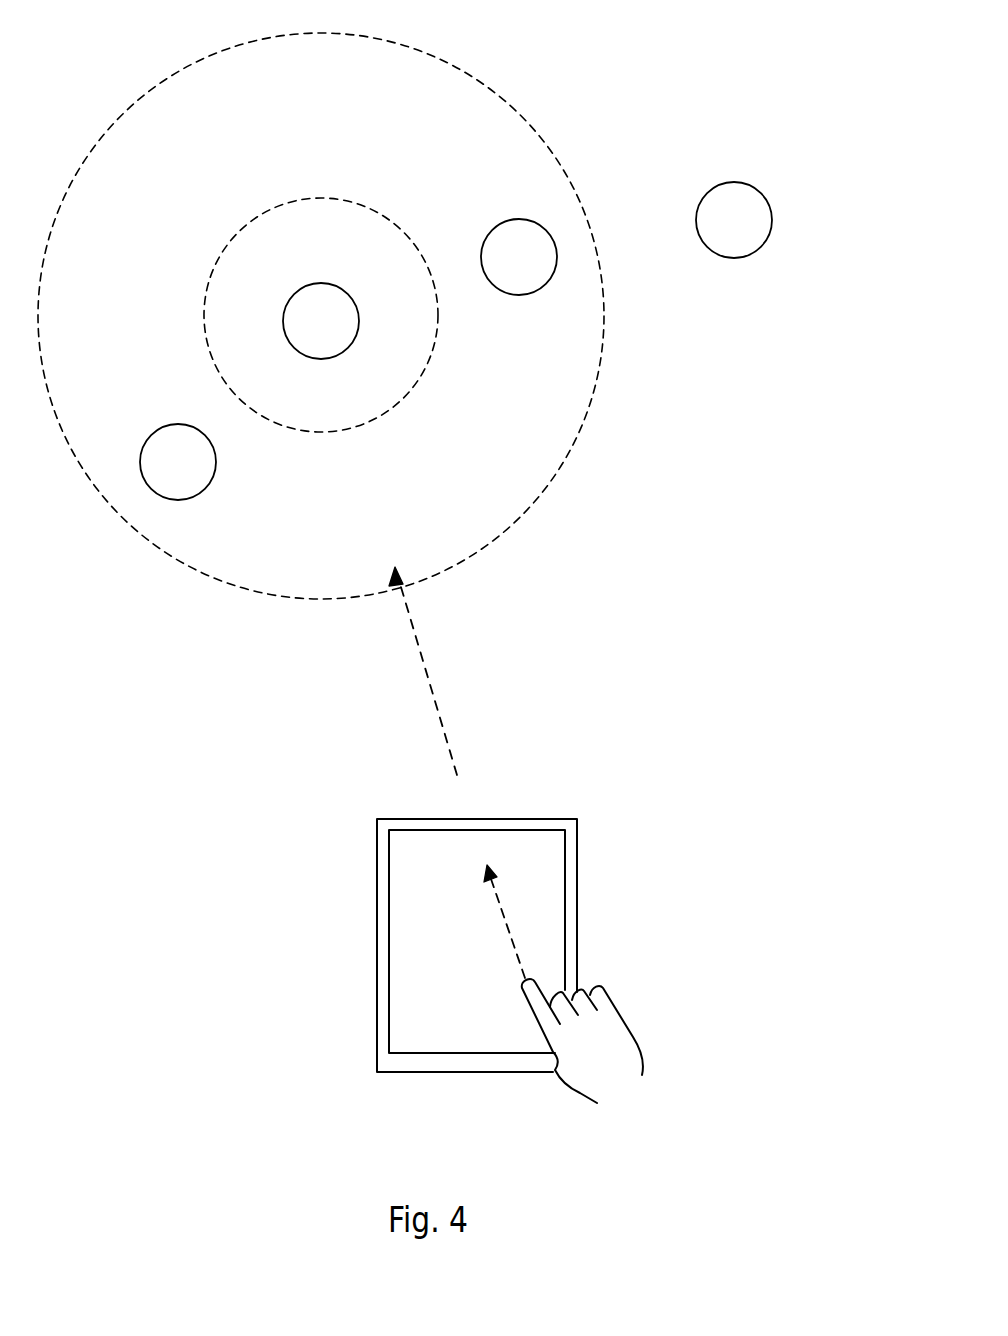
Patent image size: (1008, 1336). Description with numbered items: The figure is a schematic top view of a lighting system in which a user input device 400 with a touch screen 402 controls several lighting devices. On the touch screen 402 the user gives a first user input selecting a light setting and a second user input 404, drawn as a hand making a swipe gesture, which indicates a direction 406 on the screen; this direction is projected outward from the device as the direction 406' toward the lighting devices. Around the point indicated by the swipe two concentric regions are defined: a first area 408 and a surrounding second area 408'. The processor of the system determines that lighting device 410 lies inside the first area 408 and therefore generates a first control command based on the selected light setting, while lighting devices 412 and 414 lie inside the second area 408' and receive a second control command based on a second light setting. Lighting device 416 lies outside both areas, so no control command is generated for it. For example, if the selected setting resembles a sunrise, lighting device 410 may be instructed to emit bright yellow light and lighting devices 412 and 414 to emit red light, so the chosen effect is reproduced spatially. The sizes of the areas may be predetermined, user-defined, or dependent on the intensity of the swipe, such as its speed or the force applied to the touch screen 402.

The user input device 400 is at (573, 847).
The touch screen 402 is at (540, 903).
The second user input 404 is at (608, 1044).
The direction 406 is at (568, 923).
The direction 406' is at (369, 671).
The first area 408 is at (369, 316).
The second area 408' is at (355, 316).
The lighting device 410 is at (359, 331).
The lighting device 412 is at (178, 473).
The lighting device 414 is at (537, 263).
The lighting device 416 is at (747, 228).